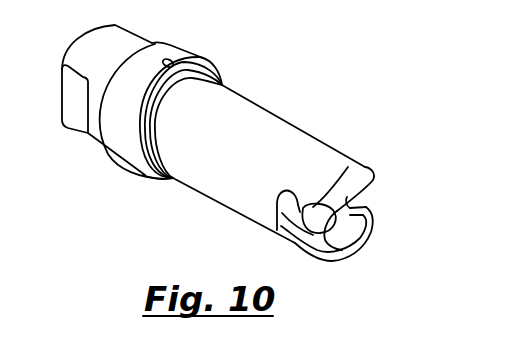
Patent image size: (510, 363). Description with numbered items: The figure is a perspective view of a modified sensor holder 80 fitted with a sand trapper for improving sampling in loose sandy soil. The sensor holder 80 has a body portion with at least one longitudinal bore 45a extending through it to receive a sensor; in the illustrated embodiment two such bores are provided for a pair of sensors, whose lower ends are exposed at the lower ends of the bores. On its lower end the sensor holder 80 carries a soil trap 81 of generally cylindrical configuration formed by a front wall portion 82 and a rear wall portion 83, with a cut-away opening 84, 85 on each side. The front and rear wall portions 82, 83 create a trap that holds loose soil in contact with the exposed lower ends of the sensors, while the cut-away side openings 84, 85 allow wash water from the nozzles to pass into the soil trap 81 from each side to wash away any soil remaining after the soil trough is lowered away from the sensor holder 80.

The sensor holder 80 is at (293, 138).
The front wall portion 82 is at (348, 166).
The cut-away opening 85 is at (357, 188).
The soil trap 81 is at (358, 225).
The rear wall portion 83 is at (347, 242).
The cut-away opening 84 is at (293, 210).
The longitudinal bore 45a is at (345, 243).